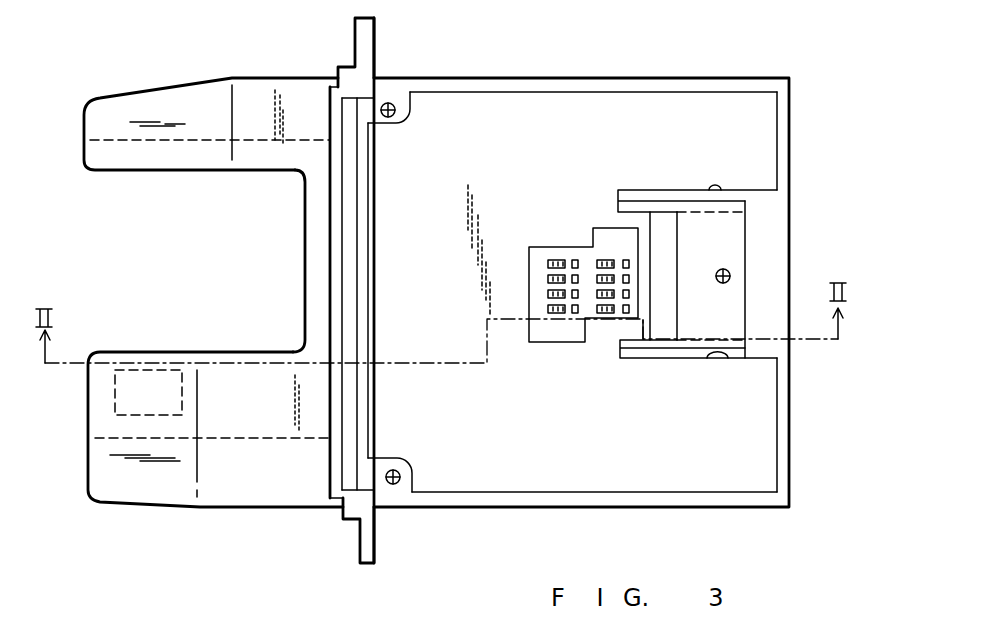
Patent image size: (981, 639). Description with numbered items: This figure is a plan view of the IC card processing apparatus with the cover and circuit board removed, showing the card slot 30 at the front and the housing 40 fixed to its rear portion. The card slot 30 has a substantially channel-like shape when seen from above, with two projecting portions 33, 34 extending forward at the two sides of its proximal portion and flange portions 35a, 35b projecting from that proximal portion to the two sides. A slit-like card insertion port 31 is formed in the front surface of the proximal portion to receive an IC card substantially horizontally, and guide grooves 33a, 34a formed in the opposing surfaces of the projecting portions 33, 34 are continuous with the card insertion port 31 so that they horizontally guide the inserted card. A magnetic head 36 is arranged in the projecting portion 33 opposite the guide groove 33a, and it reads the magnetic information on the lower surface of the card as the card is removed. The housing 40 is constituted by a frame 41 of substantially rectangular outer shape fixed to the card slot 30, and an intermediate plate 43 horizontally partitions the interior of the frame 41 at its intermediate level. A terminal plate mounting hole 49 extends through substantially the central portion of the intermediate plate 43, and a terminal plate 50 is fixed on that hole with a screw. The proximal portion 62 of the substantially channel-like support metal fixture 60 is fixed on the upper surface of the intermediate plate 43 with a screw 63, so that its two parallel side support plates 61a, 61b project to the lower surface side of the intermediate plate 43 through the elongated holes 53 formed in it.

The card slot 30 is at (213, 282).
The card insertion port 31 is at (305, 248).
The projecting portion 33 is at (148, 490).
The guide groove 33a is at (274, 430).
The projecting portion 34 is at (152, 100).
The guide groove 34a is at (189, 143).
The flange portion 35a is at (378, 46).
The flange portion 35b is at (378, 536).
The magnetic head 36 is at (158, 378).
The housing 40 is at (578, 275).
The frame 41 is at (555, 80).
The intermediate plate 43 is at (555, 482).
The terminal plate mounting hole 49 is at (532, 258).
The terminal plate 50 is at (586, 302).
The elongated holes 53 is at (715, 189).
The support metal fixture 60 is at (727, 277).
The side support plate 61a is at (646, 195).
The side support plate 61b is at (662, 340).
The proximal portion 62 is at (737, 232).
The screw 63 is at (731, 275).